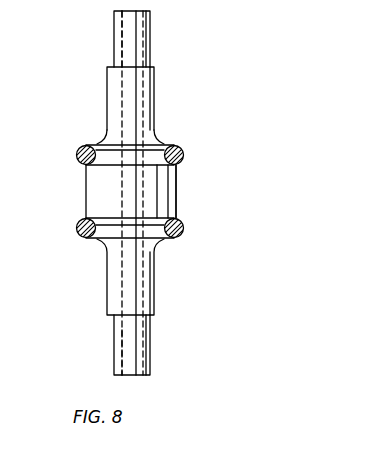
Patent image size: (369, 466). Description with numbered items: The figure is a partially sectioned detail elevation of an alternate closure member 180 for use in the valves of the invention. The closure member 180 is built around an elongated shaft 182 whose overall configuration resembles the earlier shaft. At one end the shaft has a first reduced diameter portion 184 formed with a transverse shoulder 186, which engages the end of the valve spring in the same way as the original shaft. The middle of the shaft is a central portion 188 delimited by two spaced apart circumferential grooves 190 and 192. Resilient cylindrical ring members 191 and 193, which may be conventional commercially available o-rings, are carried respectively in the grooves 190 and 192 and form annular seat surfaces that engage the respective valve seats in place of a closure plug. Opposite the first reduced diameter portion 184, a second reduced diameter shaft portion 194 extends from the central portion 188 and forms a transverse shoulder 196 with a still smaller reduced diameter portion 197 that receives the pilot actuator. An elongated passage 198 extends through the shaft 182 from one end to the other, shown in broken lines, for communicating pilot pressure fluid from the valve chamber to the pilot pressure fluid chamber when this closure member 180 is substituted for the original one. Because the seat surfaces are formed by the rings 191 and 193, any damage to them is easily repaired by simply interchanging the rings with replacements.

The closure member 180 is at (192, 179).
The elongated shaft 182 is at (177, 198).
The first reduced diameter portion 184 is at (155, 298).
The transverse shoulder 186 is at (112, 325).
The central portion 188 is at (85, 199).
The circumferential groove 190 is at (77, 238).
The resilient cylindrical ring member 191 is at (180, 233).
The circumferential groove 192 is at (77, 157).
The resilient cylindrical ring member 193 is at (85, 146).
The second reduced diameter shaft portion 194 is at (154, 83).
The transverse shoulder 196 is at (114, 62).
The reduced diameter portion 197 is at (150, 42).
The bore passage 198 is at (122, 362).